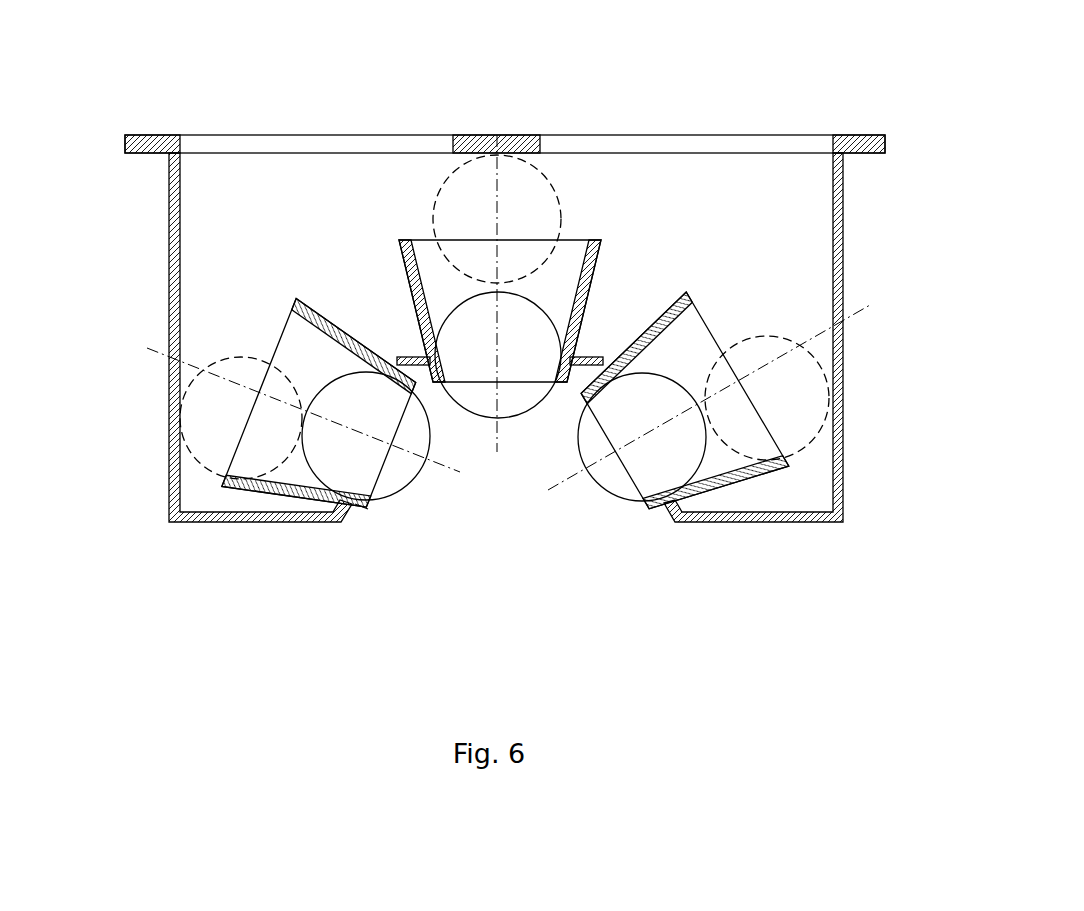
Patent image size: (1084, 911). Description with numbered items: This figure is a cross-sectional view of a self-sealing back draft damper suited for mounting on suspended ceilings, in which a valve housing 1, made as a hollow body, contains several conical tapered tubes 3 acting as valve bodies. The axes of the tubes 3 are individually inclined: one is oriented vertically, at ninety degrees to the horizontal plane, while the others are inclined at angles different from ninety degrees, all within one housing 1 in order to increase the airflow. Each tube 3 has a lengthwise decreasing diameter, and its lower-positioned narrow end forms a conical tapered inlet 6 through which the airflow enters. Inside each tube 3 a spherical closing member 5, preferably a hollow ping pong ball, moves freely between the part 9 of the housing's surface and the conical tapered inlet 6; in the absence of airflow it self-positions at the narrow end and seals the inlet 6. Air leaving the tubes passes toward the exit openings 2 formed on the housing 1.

The valve housing 1 is at (232, 517).
The exit openings 2 is at (290, 142).
The conical tapered tube 3 is at (276, 491).
The spherical closing member 5 is at (400, 483).
The conical tapered inlet 6 is at (365, 498).
The part of the housing's surface 9 is at (487, 142).